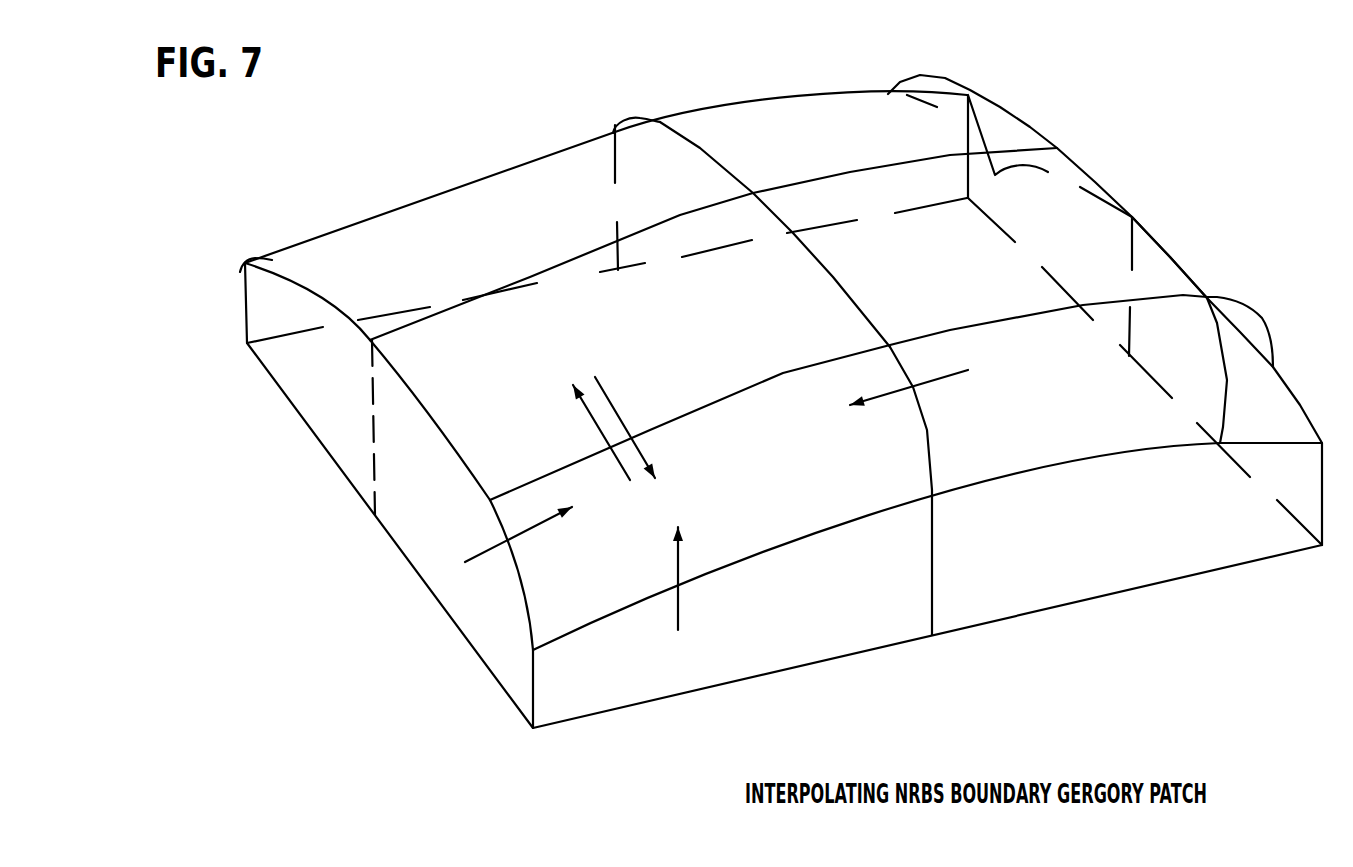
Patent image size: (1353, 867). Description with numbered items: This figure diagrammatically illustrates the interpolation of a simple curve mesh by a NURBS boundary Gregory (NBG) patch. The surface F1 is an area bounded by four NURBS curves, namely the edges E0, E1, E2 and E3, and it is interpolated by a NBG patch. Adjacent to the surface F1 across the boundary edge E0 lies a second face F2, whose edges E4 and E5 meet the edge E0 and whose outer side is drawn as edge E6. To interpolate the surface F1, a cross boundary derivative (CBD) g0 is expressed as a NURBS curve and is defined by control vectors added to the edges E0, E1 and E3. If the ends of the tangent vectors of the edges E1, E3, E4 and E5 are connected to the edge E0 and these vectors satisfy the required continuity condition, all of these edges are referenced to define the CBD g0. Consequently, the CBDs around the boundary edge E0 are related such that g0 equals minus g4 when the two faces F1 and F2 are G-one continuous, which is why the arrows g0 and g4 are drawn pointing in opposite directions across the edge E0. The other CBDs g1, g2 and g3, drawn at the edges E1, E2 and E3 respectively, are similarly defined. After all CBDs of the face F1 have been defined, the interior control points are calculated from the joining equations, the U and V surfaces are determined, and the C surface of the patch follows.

The boundary edge E0 is at (848, 397).
The edge E1 is at (734, 570).
The edge E2 is at (876, 546).
The edge E3 is at (930, 418).
The edge E4 is at (775, 234).
The edge E5 is at (430, 420).
The edge E6 is at (553, 689).
The surface F1 is at (855, 472).
The face F2 is at (713, 311).
The cross boundary derivative g0 is at (625, 413).
The cross boundary derivative g1 is at (540, 529).
The cross boundary derivative g2 is at (681, 596).
The cross boundary derivative g3 is at (930, 376).
The cross boundary derivative g4 is at (592, 416).